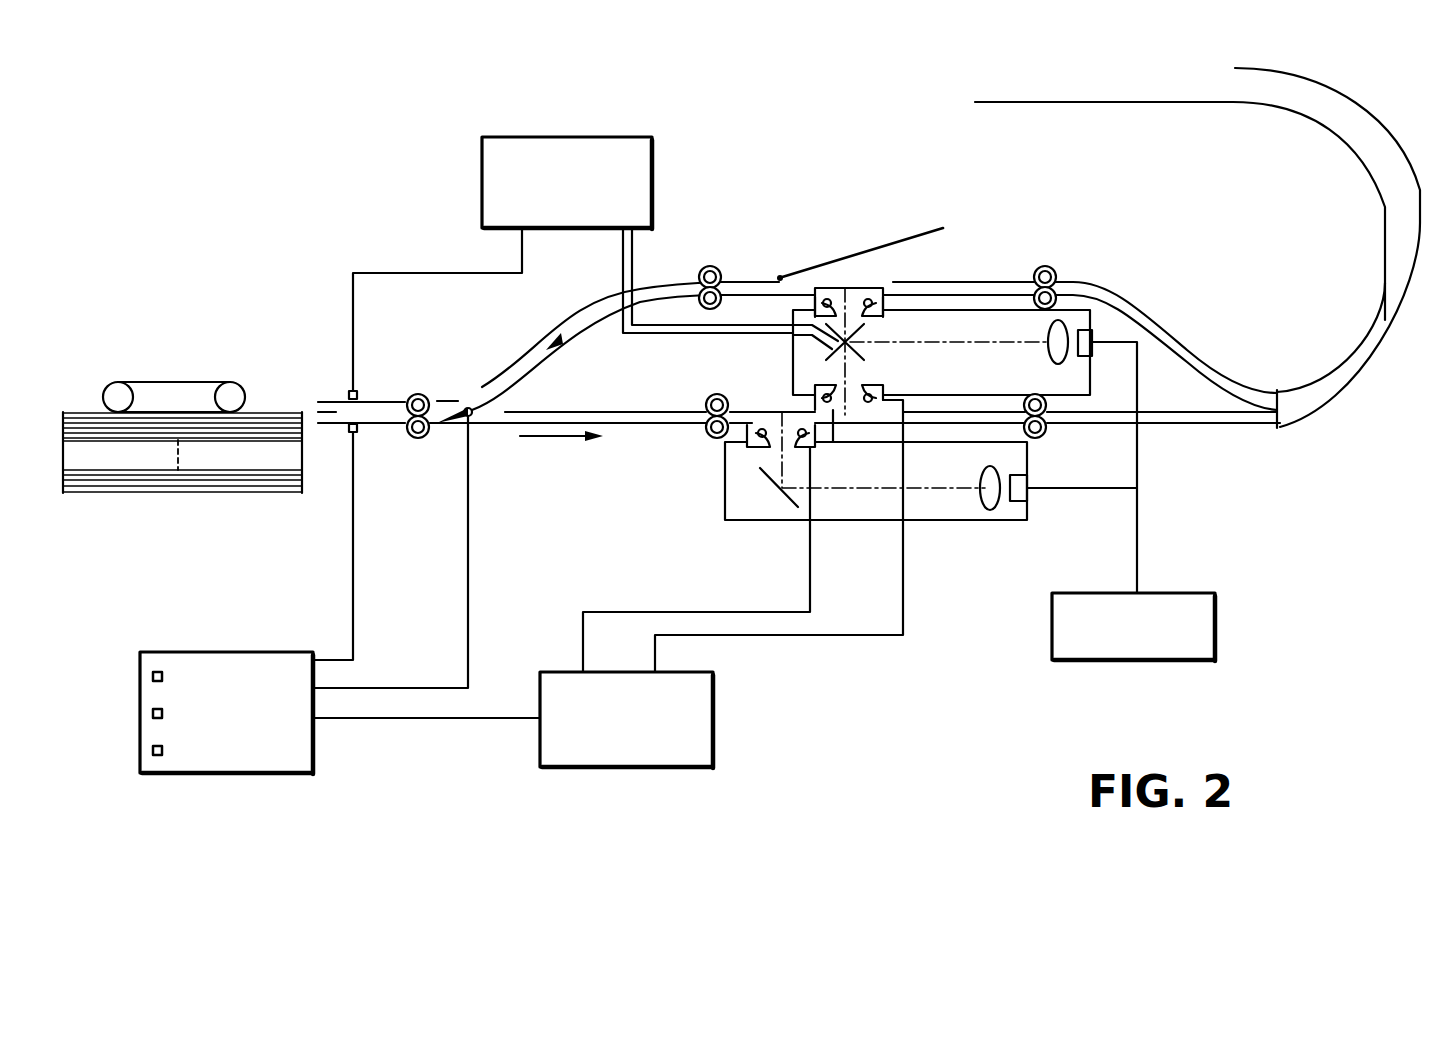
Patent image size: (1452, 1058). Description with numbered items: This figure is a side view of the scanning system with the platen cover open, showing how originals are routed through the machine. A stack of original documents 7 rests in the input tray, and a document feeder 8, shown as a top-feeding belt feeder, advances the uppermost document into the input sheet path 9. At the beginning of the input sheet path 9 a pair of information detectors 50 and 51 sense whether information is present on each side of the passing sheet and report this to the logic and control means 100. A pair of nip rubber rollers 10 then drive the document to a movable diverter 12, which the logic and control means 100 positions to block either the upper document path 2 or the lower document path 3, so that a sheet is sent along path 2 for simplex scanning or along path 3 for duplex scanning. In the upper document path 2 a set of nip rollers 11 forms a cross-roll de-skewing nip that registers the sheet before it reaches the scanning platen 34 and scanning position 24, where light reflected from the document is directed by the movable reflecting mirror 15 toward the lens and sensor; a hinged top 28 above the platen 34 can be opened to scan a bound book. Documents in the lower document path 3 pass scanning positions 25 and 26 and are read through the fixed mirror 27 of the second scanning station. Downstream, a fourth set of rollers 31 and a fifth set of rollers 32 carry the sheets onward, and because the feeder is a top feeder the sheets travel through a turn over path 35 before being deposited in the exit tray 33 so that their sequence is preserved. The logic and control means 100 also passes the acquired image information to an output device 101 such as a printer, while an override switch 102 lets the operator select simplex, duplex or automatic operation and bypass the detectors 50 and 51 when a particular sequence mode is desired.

The upper document path 2 is at (1160, 302).
The lower document path 3 is at (1212, 425).
The original documents 7 is at (110, 493).
The document feeder 8 is at (194, 355).
The input sheet path 9 is at (358, 410).
The nip rubber rollers 10 is at (425, 394).
The second set of nip rollers 11 is at (712, 266).
The movable diverter 12 is at (460, 425).
The reflecting system 15 is at (822, 352).
The scanning position 24 is at (887, 283).
The scanning position 25 is at (834, 442).
The scanning position 26 is at (773, 411).
The mirror 27 is at (782, 492).
The hinged top 28 is at (843, 258).
The fourth set of rollers 31 is at (1050, 265).
The fifth set of rollers 32 is at (1045, 437).
The exit tray 33 is at (1085, 103).
The scanning platen 34 is at (857, 288).
The turn over path 35 is at (1388, 335).
The information detector 50 is at (349, 392).
The information detector 51 is at (351, 430).
The logic and control means 100 is at (652, 135).
The output device 101 is at (1215, 622).
The override switch 102 is at (245, 775).